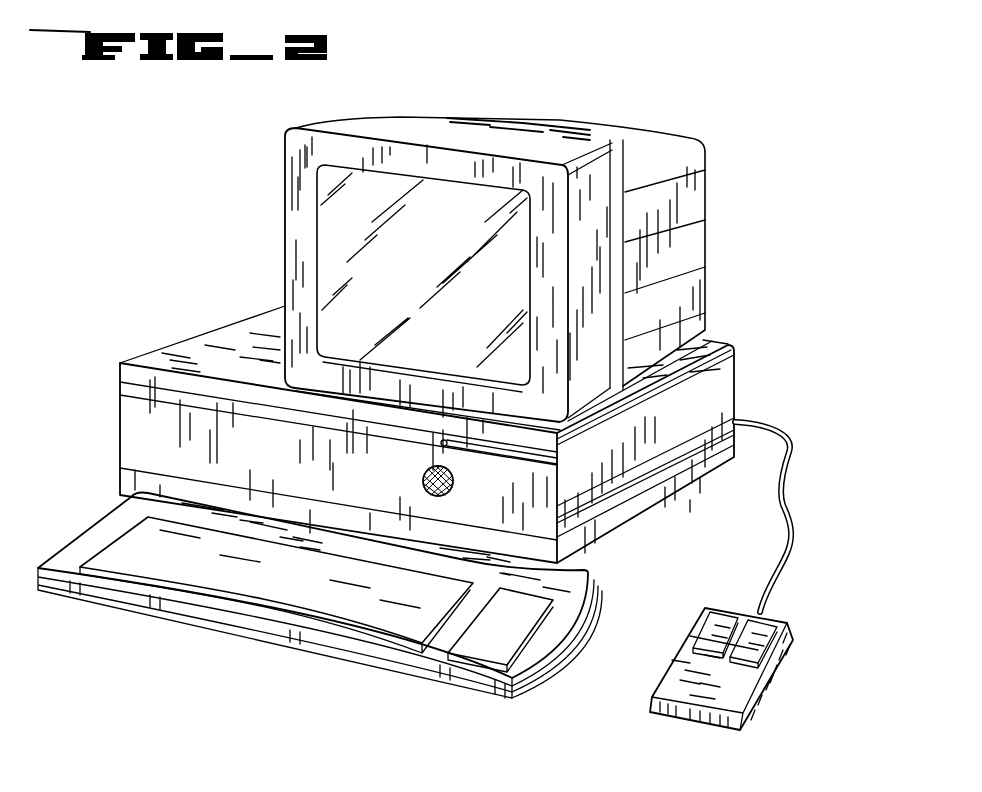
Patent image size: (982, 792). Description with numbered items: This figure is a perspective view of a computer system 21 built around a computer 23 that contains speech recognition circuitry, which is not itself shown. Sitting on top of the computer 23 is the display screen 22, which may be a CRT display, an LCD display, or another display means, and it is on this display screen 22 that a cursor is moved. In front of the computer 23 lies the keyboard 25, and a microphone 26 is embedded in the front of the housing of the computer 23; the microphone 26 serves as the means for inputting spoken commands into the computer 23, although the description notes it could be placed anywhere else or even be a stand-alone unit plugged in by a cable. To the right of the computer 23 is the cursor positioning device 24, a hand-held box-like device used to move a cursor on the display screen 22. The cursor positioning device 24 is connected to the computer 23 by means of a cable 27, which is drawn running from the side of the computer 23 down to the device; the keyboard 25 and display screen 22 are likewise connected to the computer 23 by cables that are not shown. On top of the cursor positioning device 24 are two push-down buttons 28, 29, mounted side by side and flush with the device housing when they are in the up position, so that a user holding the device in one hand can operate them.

The computer system 21 is at (760, 147).
The display screen 22 is at (328, 232).
The computer 23 is at (737, 368).
The cursor positioning device 24 is at (793, 666).
The keyboard 25 is at (112, 533).
The microphone 26 is at (423, 483).
The cable 27 is at (787, 480).
The push-down button 28 is at (773, 618).
The push-down button 29 is at (727, 607).